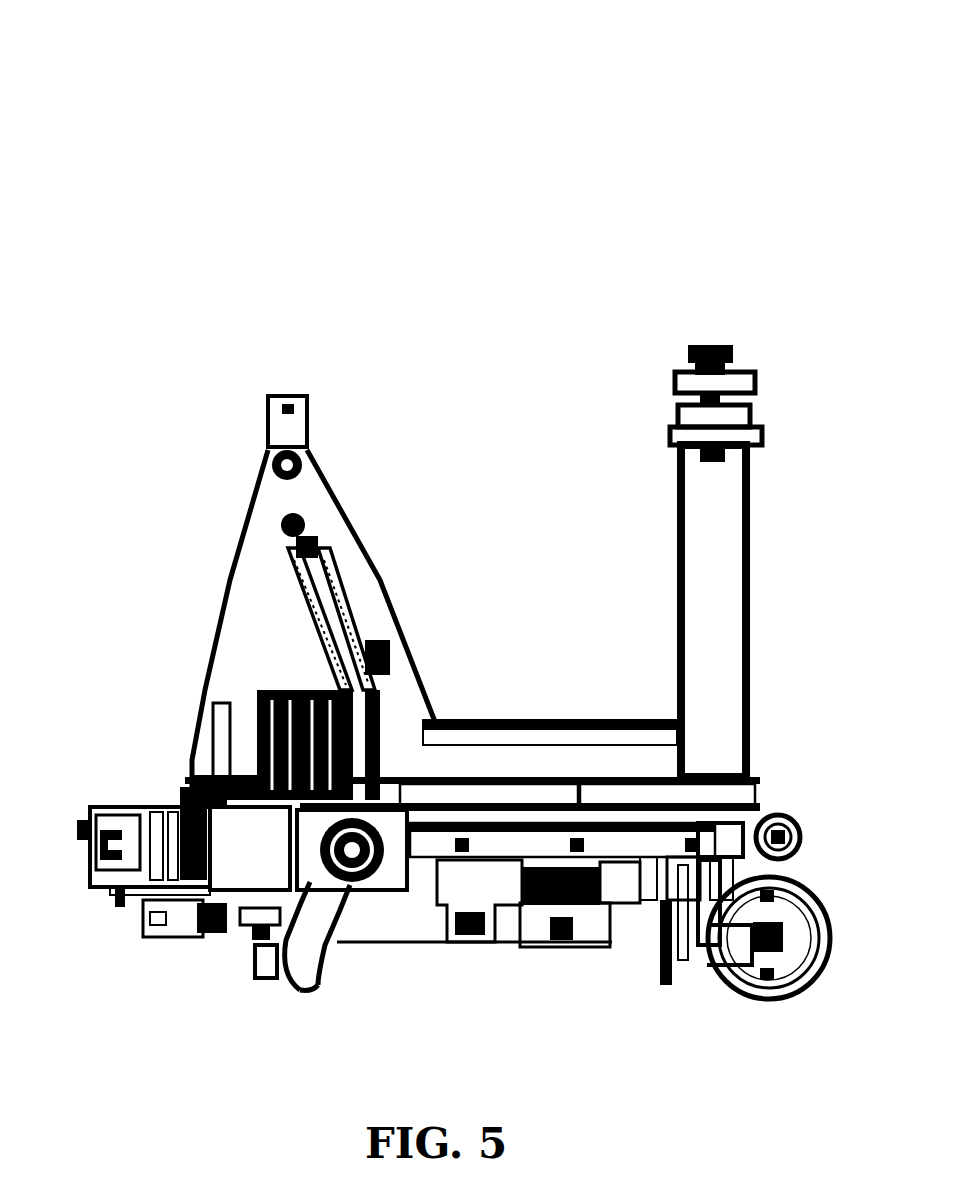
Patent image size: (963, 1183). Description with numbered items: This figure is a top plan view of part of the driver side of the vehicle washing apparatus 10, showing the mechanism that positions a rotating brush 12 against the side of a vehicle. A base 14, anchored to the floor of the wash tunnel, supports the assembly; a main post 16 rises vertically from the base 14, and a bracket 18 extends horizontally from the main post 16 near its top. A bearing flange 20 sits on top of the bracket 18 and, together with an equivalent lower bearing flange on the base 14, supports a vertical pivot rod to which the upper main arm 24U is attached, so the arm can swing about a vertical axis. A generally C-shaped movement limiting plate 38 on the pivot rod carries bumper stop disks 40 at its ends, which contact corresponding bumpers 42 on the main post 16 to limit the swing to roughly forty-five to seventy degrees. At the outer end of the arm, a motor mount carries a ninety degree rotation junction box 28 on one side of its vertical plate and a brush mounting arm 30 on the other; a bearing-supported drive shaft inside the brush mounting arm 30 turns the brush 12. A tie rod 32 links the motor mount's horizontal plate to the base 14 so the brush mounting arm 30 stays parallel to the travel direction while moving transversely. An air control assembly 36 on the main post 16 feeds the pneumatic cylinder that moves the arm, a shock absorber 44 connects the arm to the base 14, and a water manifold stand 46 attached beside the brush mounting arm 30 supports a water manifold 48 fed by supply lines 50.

The vehicle washing apparatus 10 is at (168, 265).
The brush 12 is at (798, 77).
The base 14 is at (279, 657).
The main post 16 is at (267, 864).
The bracket 18 is at (307, 875).
The bearing flange 20 is at (380, 880).
The upper main arm 24U is at (487, 843).
The junction box 28 is at (610, 887).
The brush mounting arm 30 is at (727, 623).
The tie rod 32 is at (593, 717).
The air control assembly 36 is at (90, 812).
The movement limiting plate 38 is at (300, 990).
The bumper stop disk 40 is at (247, 923).
The bumper 42 is at (193, 937).
The shock absorber 44 is at (345, 603).
The water manifold stand 46 is at (487, 778).
The water manifold 48 is at (387, 645).
The supply lines 50 is at (263, 690).